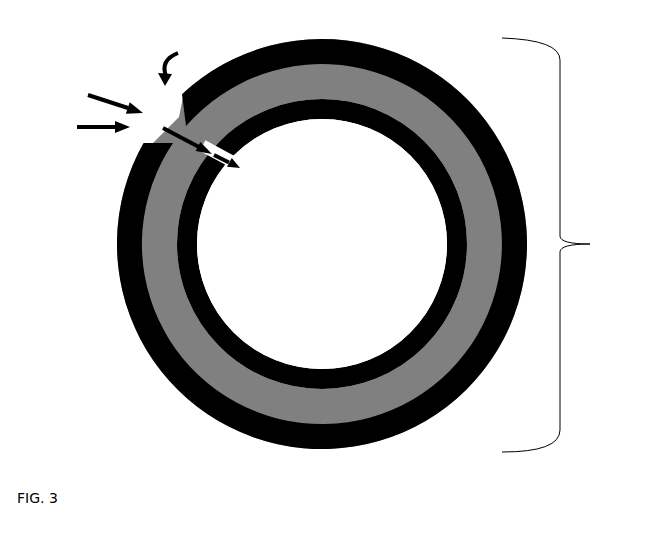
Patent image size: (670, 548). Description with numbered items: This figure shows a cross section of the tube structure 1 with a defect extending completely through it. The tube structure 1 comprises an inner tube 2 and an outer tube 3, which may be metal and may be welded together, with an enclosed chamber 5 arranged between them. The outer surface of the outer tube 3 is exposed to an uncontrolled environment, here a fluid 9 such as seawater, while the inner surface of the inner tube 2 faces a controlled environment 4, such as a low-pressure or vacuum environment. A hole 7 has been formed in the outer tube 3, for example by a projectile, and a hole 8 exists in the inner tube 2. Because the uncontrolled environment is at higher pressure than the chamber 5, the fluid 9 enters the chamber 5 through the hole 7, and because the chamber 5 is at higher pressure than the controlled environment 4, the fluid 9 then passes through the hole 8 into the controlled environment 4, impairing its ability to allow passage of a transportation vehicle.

The tube structure 1 is at (596, 244).
The inner tube 2 is at (237, 143).
The outer tube 3 is at (276, 46).
The controlled environment 4 is at (328, 228).
The enclosed chamber 5 is at (313, 63).
The hole 7 is at (162, 113).
The hole 8 is at (222, 150).
The fluid 9 is at (170, 50).